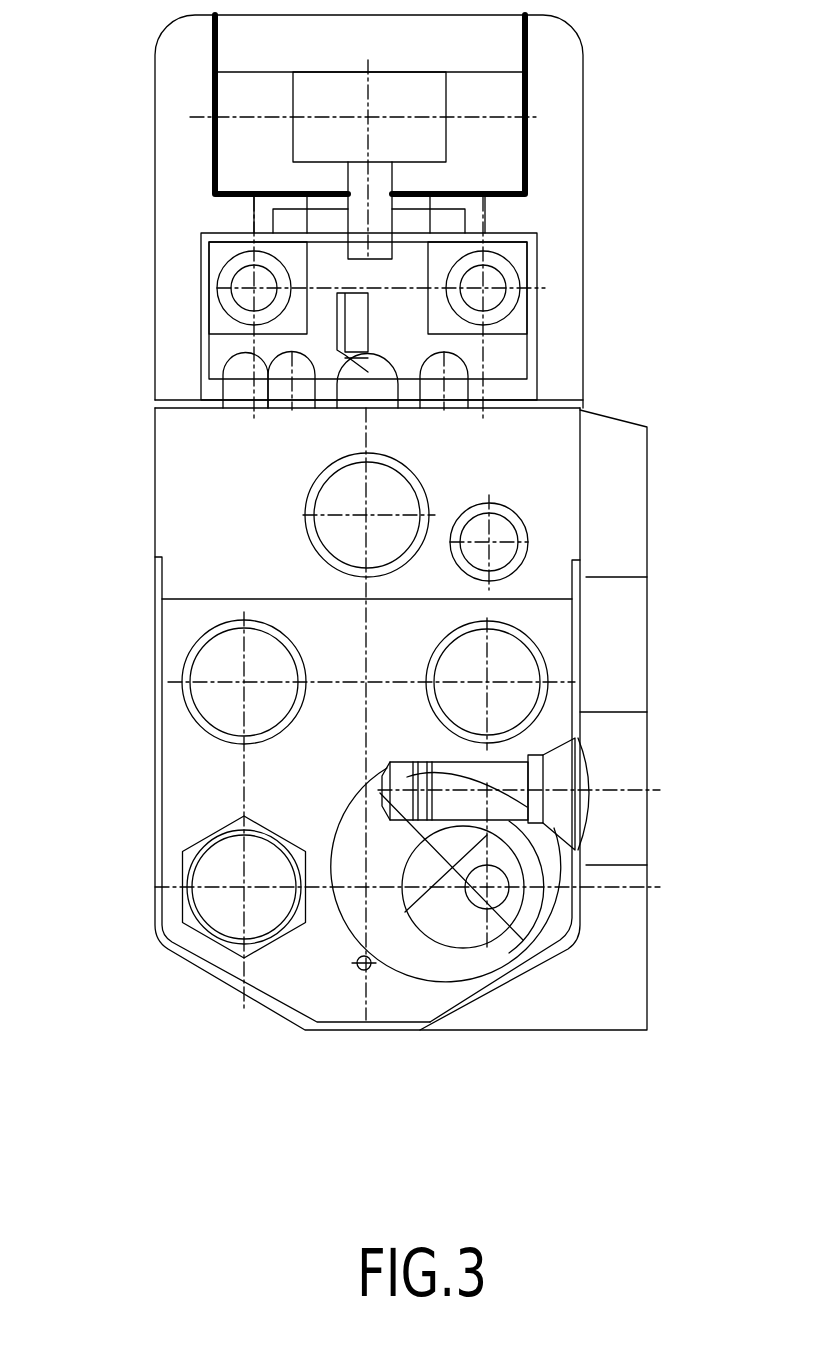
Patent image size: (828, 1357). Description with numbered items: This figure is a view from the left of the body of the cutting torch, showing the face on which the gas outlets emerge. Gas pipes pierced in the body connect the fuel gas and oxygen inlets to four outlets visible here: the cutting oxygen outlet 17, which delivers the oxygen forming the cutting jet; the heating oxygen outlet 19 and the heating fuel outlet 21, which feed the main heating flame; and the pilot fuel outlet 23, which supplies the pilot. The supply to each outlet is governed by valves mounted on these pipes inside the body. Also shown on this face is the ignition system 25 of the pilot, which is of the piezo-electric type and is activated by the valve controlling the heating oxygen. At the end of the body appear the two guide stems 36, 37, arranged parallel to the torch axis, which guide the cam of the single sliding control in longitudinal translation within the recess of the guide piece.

The cutting oxygen outlet 17 is at (392, 498).
The heating oxygen outlet 19 is at (527, 670).
The heating fuel outlet 21 is at (220, 704).
The pilot fuel outlet 23 is at (212, 870).
The ignition system 25 is at (510, 877).
The guide stem 36 is at (247, 275).
The guide stem 37 is at (503, 273).